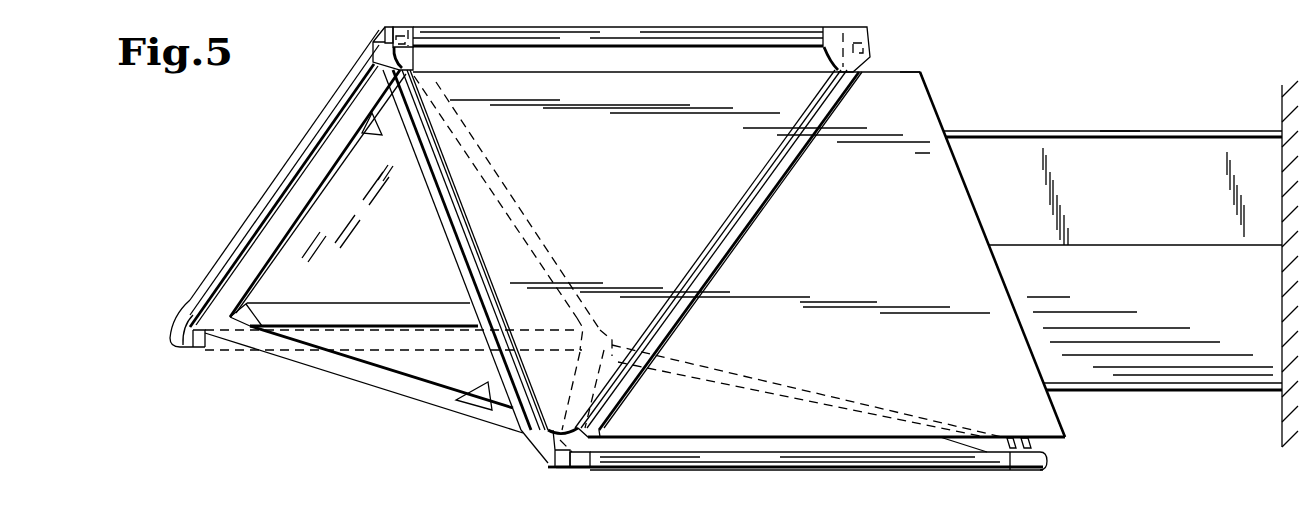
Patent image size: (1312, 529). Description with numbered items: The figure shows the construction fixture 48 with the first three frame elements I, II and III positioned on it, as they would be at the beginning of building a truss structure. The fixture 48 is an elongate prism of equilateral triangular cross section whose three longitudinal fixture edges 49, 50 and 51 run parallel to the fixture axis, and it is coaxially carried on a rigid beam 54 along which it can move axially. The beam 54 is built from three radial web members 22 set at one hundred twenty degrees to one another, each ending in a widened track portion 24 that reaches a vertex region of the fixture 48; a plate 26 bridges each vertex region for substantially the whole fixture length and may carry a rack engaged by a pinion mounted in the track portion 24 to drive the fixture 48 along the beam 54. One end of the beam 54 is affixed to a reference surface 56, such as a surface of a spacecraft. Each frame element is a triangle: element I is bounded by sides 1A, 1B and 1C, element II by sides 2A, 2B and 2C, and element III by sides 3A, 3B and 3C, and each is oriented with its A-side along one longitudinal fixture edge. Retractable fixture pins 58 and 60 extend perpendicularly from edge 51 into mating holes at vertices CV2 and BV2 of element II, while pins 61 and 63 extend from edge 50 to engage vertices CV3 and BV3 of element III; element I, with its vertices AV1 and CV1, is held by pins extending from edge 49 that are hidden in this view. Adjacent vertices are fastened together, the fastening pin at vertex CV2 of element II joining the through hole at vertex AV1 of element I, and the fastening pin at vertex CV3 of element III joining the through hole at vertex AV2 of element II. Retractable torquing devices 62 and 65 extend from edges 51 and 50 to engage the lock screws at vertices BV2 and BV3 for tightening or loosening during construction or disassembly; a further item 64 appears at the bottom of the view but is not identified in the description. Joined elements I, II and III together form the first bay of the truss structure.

The tubular member of first triangle 1A is at (413, 327).
The tubular member of first triangle 1B is at (279, 174).
The tubular member of first triangle 1C is at (506, 195).
The side of second frame element 2A is at (673, 27).
The side of second frame element 2B is at (478, 177).
The side of second frame element 2C is at (723, 255).
The side of third frame element 3A is at (799, 471).
The side of third frame element 3B is at (583, 373).
The side of third frame element 3C is at (852, 402).
The radial web member 22 is at (1183, 227).
The widened track portion 24 is at (1195, 131).
The plate 26 is at (376, 137).
The construction fixture 48 is at (957, 110).
The longitudinal fixture edge 49 is at (193, 333).
The longitudinal fixture edge 50 is at (1063, 440).
The longitudinal fixture edge 51 is at (907, 72).
The rigid beam 54 is at (1118, 131).
The reference surface 56 is at (1282, 111).
The fixture pin 58 is at (410, 48).
The fixture pin 60 is at (823, 26).
The fixture pin 61 is at (590, 437).
The torquing device 62 is at (866, 44).
The fixture pin 63 is at (1005, 452).
The lower member 64 is at (464, 526).
The torquing device 65 is at (1040, 438).
The vertex of first frame element AV1 is at (373, 42).
The vertex of second frame element AV2 is at (553, 447).
The vertex of second frame element BV2 is at (855, 27).
The vertex of third frame element BV3 is at (1040, 469).
The vertex C of triangle I CV1 is at (171, 342).
The vertex of second frame element CV2 is at (401, 26).
The vertex of third frame element CV3 is at (580, 470).
The first frame element I is at (318, 98).
The second frame element II is at (507, 21).
The third frame element III is at (721, 471).